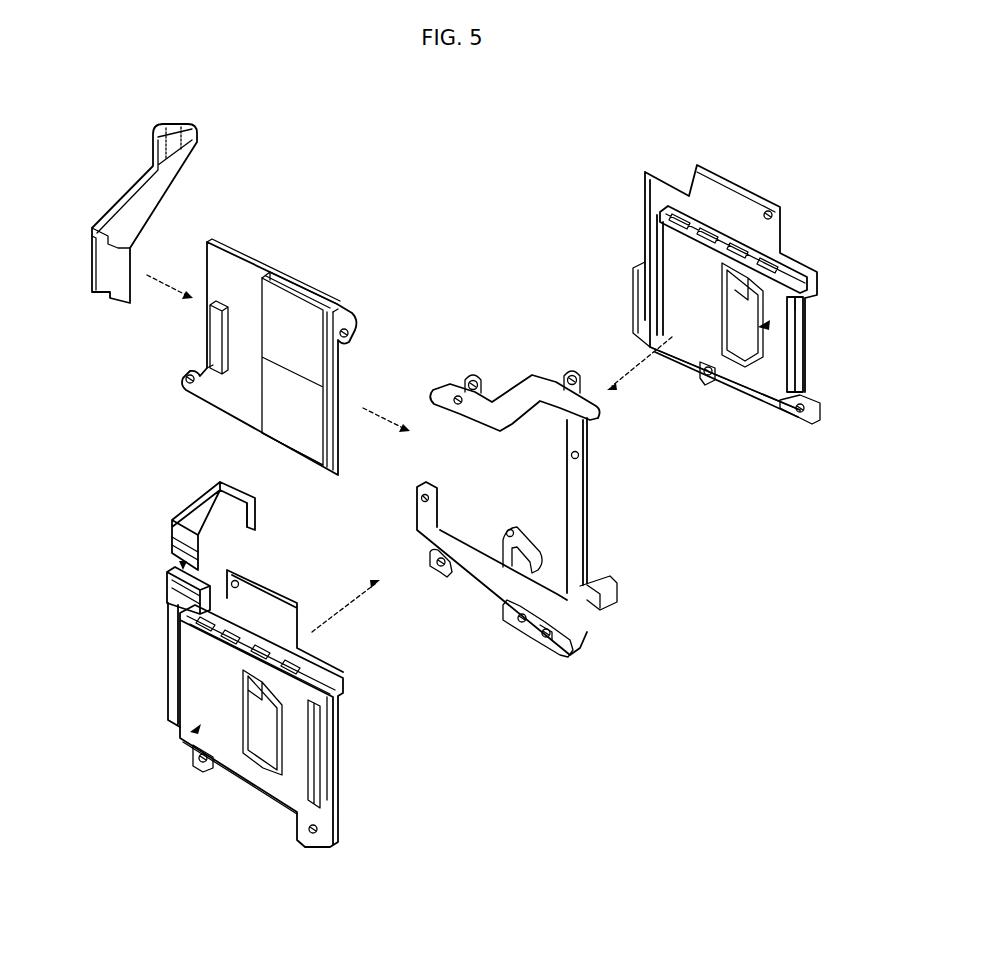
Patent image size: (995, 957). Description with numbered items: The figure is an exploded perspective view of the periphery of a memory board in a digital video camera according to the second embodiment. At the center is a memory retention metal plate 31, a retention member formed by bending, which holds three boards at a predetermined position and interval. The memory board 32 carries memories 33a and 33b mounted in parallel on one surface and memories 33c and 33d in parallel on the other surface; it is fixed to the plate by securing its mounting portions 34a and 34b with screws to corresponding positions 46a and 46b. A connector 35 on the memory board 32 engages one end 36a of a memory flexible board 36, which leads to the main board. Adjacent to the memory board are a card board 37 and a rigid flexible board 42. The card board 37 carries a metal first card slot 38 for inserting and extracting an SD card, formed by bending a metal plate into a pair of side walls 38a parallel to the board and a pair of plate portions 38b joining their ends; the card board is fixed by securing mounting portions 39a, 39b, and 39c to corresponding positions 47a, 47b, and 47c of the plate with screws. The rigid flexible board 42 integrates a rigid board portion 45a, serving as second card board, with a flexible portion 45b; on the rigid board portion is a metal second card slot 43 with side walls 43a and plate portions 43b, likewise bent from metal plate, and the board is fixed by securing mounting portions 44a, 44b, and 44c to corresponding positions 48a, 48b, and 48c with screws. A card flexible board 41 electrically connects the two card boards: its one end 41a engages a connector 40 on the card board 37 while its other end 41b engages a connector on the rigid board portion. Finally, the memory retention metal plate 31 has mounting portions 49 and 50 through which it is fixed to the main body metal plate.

The memory retention metal plate 31 is at (590, 500).
The memory board 32 is at (212, 243).
The memory 33a is at (288, 283).
The memory 33b is at (276, 437).
The memory 33c is at (328, 290).
The memory 33d is at (345, 444).
The mounting portion 34a is at (184, 378).
The mounting portion 34b is at (352, 332).
The connector 35 is at (208, 326).
The memory flexible board 36 is at (136, 184).
The one end of memory flexible board 36a is at (92, 260).
The card board 37 is at (166, 681).
The first card slot 38 is at (186, 736).
The side walls 38a is at (278, 742).
The plate portions 38b is at (308, 668).
The mounting portion 39a is at (206, 772).
The mounting portion 39b is at (315, 838).
The mounting portion 39c is at (238, 578).
The connector 40 is at (165, 604).
The card flexible board 41 is at (170, 523).
The one end of card flexible board 41a is at (170, 548).
The another end of card flexible board 41b is at (256, 505).
The rigid flexible board 42 is at (643, 224).
The second card slot 43 is at (808, 318).
The side walls 43a is at (760, 344).
The plate portions 43b is at (793, 270).
The mounting portion 44a is at (710, 385).
The mounting portion 44b is at (800, 418).
The mounting portion 44c is at (768, 208).
The rigid board portion 45a is at (716, 178).
The flexible portion 45b is at (632, 291).
The corresponding position 46a is at (414, 495).
The corresponding position 46b is at (588, 456).
The corresponding position 47a is at (441, 578).
The corresponding position 47b is at (546, 654).
The corresponding position 47c is at (473, 375).
The corresponding position 48a is at (512, 524).
The corresponding position 48b is at (606, 578).
The corresponding position 48c is at (572, 371).
The mounting portion 49 is at (520, 632).
The mounting portion 50 is at (463, 410).